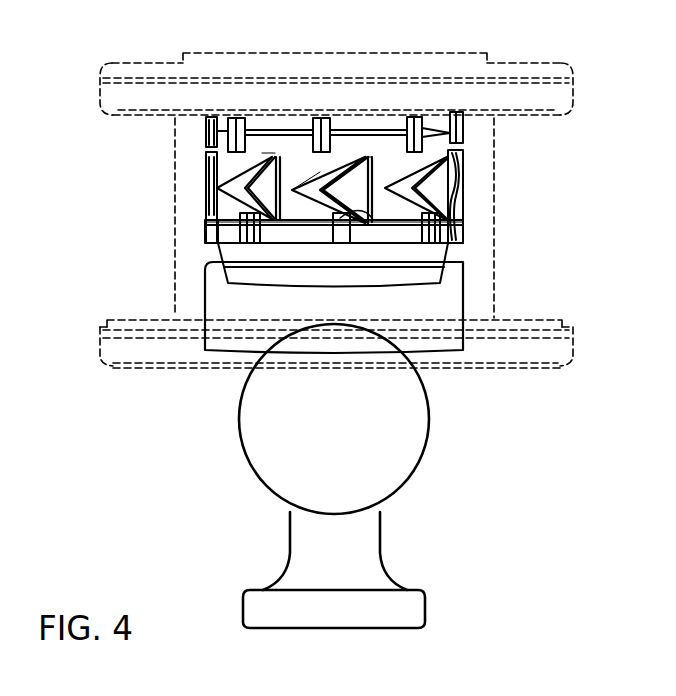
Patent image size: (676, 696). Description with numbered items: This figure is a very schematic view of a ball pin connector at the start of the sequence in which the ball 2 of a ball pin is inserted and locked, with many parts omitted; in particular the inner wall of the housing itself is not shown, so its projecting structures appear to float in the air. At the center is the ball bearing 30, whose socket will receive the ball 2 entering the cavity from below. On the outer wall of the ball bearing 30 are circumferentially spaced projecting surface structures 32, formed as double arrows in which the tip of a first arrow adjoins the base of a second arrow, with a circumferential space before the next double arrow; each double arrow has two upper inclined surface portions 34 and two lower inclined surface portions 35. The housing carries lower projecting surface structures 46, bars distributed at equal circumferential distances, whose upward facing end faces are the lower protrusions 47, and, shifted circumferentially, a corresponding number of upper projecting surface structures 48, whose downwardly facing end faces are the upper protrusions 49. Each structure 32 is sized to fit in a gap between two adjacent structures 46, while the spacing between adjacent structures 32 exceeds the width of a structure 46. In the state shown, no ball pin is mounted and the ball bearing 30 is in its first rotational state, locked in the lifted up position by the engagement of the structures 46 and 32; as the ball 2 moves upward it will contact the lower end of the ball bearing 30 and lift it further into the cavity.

The ball 2 is at (430, 428).
The ball bearing 30 is at (470, 178).
The projecting surface structures 32 is at (362, 172).
The upper inclined surface portions 34 is at (306, 166).
The lower inclined surface portions 35 is at (345, 222).
The lower projecting surface structures 46 is at (372, 195).
The lower protrusion 47 is at (373, 195).
The upper projecting surface structures 48 is at (320, 165).
The upper protrusions 49 is at (263, 156).